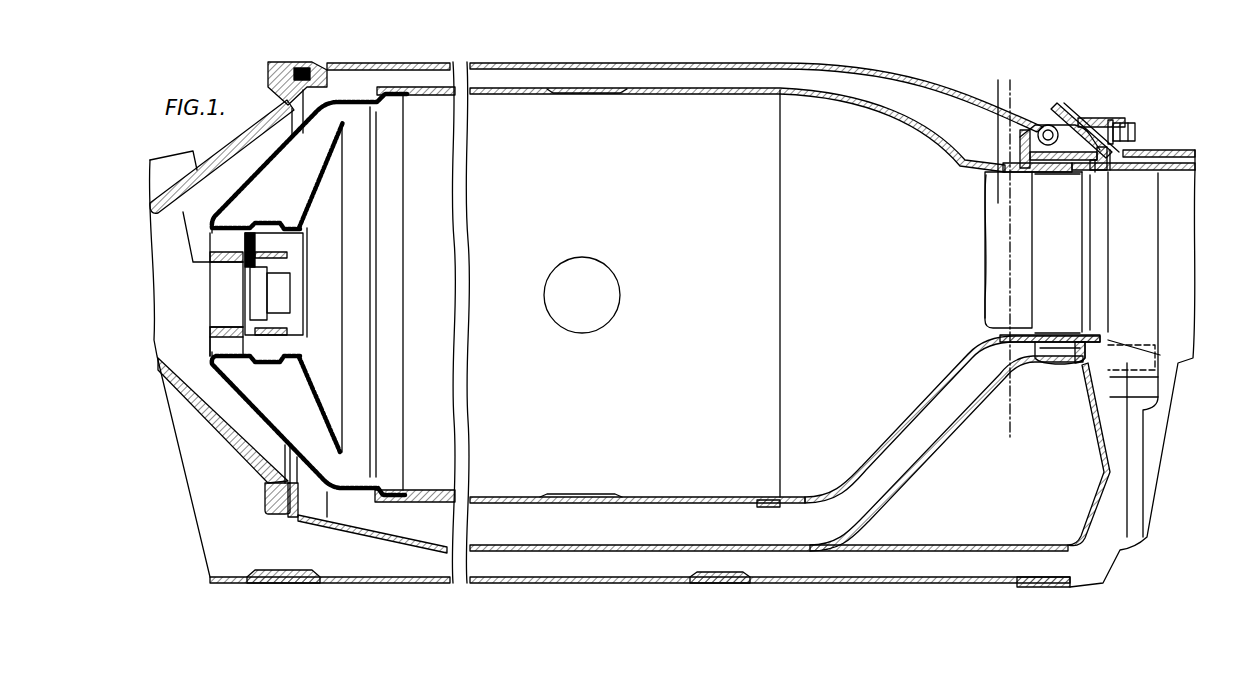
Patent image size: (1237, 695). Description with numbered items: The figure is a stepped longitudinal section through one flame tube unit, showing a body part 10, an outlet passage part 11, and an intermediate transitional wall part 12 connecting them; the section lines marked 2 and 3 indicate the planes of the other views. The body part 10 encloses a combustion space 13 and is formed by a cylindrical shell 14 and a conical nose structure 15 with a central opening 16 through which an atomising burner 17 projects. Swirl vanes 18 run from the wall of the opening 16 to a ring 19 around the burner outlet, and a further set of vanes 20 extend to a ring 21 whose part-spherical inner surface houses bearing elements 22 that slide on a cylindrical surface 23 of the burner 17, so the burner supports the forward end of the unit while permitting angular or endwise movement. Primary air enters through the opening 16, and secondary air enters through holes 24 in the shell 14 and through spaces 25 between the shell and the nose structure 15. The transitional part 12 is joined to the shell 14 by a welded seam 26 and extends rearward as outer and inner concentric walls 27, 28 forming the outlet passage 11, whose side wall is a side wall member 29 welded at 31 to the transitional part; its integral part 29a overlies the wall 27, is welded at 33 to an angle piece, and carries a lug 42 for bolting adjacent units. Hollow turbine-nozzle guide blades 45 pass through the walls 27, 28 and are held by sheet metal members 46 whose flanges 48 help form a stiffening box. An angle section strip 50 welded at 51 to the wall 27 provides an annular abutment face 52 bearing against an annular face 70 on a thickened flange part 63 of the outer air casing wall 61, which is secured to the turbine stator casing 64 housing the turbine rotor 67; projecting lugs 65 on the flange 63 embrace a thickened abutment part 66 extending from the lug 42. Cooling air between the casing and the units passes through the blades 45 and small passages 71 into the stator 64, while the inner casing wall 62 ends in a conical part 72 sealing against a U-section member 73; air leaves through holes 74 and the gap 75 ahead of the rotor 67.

The section line 2- 2 is at (1017, 124).
The bracket assembly / section 3 is at (1098, 66).
The body part 10 is at (441, 134).
The outlet passage part 11 is at (975, 263).
The intermediate transitional wall part 12 is at (866, 470).
The combustion space 13 is at (435, 326).
The cylindrical shell 14 is at (506, 496).
The conical nose structure 15 is at (292, 194).
The central opening 16 is at (288, 244).
The atomising burner 17 is at (282, 300).
The swirl vanes 18 is at (283, 250).
The ring 19 is at (270, 276).
The further set of vanes 20 is at (212, 231).
The ring 21 is at (210, 253).
The bearing elements 22 is at (213, 262).
The cylindrical surface 23 is at (232, 263).
The holes 24 is at (615, 96).
The spaces 25 is at (405, 90).
The welded seam 26 is at (766, 497).
The outer concentric wall 27 is at (1086, 180).
The inner concentric wall 28 is at (1090, 338).
The side wall member 29 is at (995, 285).
The integral part 29a is at (1010, 168).
The weld 31 is at (985, 230).
The weld 33 is at (1018, 122).
The lug 42 is at (1050, 124).
The turbine-nozzle guide blades 45 is at (1085, 258).
The sheet metal members 46 is at (1030, 172).
The flanges 48 is at (1090, 166).
The angle section strip 50 is at (1105, 165).
The weld 51 is at (1113, 160).
The annular abutment face 52 is at (1095, 166).
The outer cylindrical wall 61 is at (665, 70).
The inner cylindrical wall 62 is at (607, 545).
The thickened flange part 63 is at (1100, 120).
The turbine stator casing 64 is at (1130, 152).
The projecting lugs 65 is at (1062, 112).
The thickened abutment part 66 is at (1077, 128).
The turbine rotor 67 is at (1150, 405).
The annular face 70 is at (1135, 135).
The small passages 71 is at (1127, 128).
The conically shaped part 72 is at (943, 440).
The U-section member 73 is at (1035, 358).
The holes 74 is at (1068, 360).
The gap 75 is at (1090, 384).